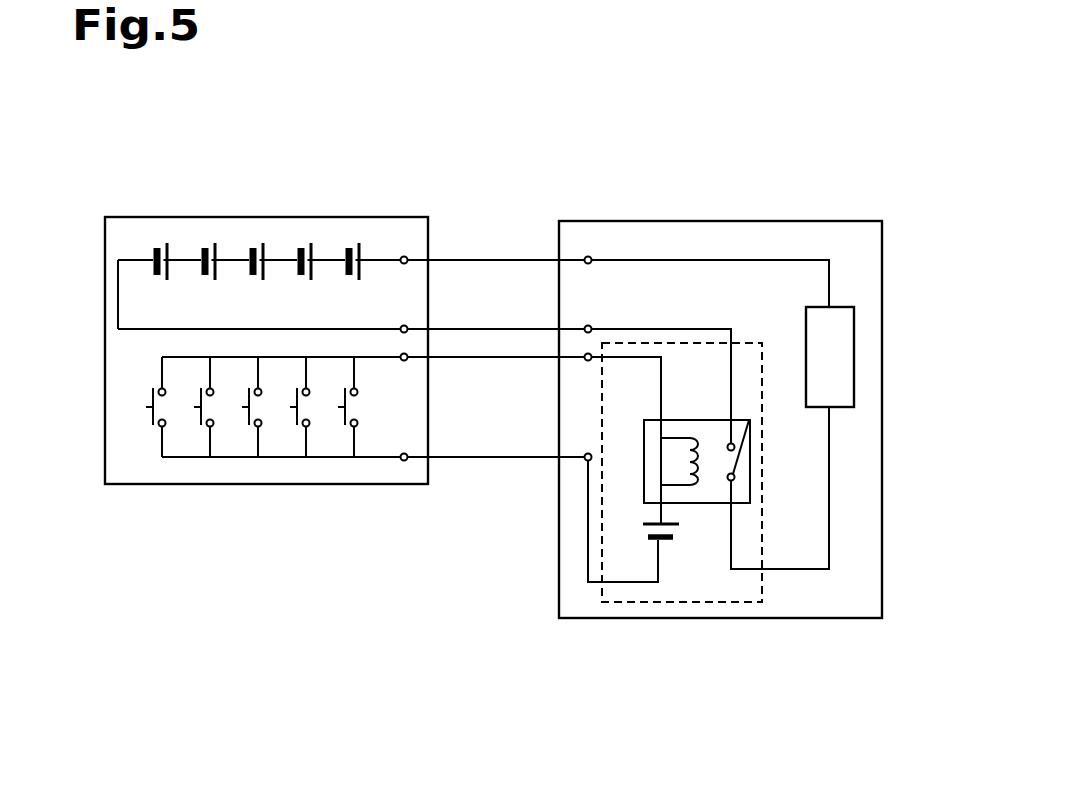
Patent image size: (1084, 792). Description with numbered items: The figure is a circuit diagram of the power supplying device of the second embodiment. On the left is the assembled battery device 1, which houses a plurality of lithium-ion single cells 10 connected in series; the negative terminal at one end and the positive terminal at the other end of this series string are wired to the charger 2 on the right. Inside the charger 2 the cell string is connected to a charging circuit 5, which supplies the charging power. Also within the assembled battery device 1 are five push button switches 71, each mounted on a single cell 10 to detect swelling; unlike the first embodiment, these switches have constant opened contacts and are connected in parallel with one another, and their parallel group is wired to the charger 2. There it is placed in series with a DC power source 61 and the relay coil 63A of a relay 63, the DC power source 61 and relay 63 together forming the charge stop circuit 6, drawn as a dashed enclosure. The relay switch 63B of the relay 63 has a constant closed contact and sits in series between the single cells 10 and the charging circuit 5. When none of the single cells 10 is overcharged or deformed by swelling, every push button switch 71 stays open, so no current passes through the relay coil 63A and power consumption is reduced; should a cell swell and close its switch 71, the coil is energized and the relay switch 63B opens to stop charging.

The assembled battery device 1 is at (409, 212).
The single cell 10 is at (247, 183).
The push button switch 71 is at (273, 479).
The charger 2 is at (769, 212).
The charging circuit 5 is at (854, 332).
The charge stop circuit 6 is at (754, 606).
The DC power source 61 is at (657, 547).
The relay 63 is at (677, 387).
The relay coil 63A is at (680, 438).
The relay switch 63B is at (749, 420).